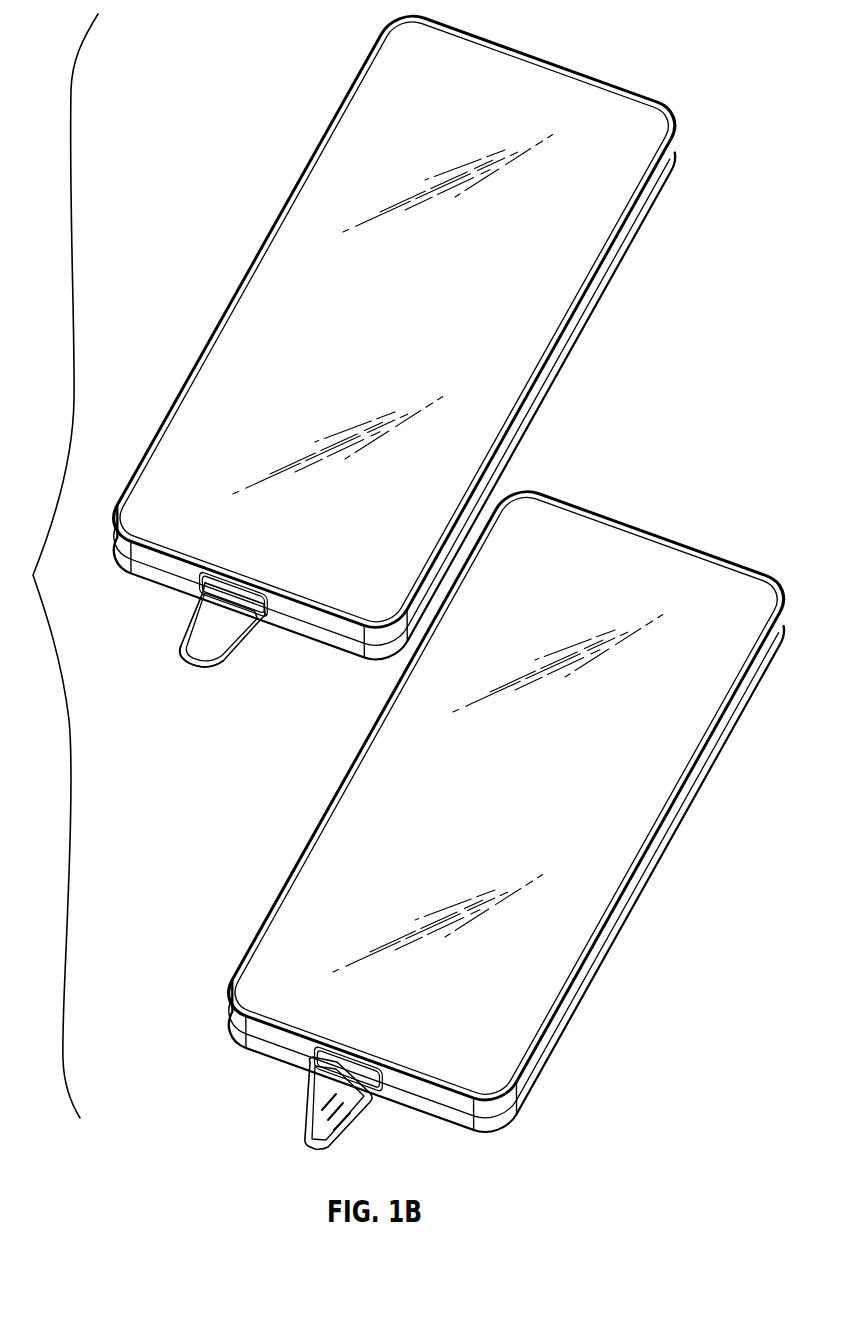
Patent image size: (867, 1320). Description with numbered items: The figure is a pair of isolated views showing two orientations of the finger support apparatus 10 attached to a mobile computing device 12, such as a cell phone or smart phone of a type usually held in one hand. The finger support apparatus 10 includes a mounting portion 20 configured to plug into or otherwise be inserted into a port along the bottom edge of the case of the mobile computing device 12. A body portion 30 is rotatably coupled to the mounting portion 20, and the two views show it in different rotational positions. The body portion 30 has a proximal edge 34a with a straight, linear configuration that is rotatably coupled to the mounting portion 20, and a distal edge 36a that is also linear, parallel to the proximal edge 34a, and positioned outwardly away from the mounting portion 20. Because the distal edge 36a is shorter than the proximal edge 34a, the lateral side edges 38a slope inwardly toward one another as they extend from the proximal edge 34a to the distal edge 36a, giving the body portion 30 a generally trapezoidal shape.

The finger support apparatus 10 is at (256, 1086).
The mobile computing device 12 is at (556, 377).
The mounting portion 20 is at (240, 582).
The body portion 30 is at (249, 891).
The proximal edge 34a is at (336, 1112).
The distal edge 36a is at (198, 659).
The lateral side edges 38a is at (285, 891).